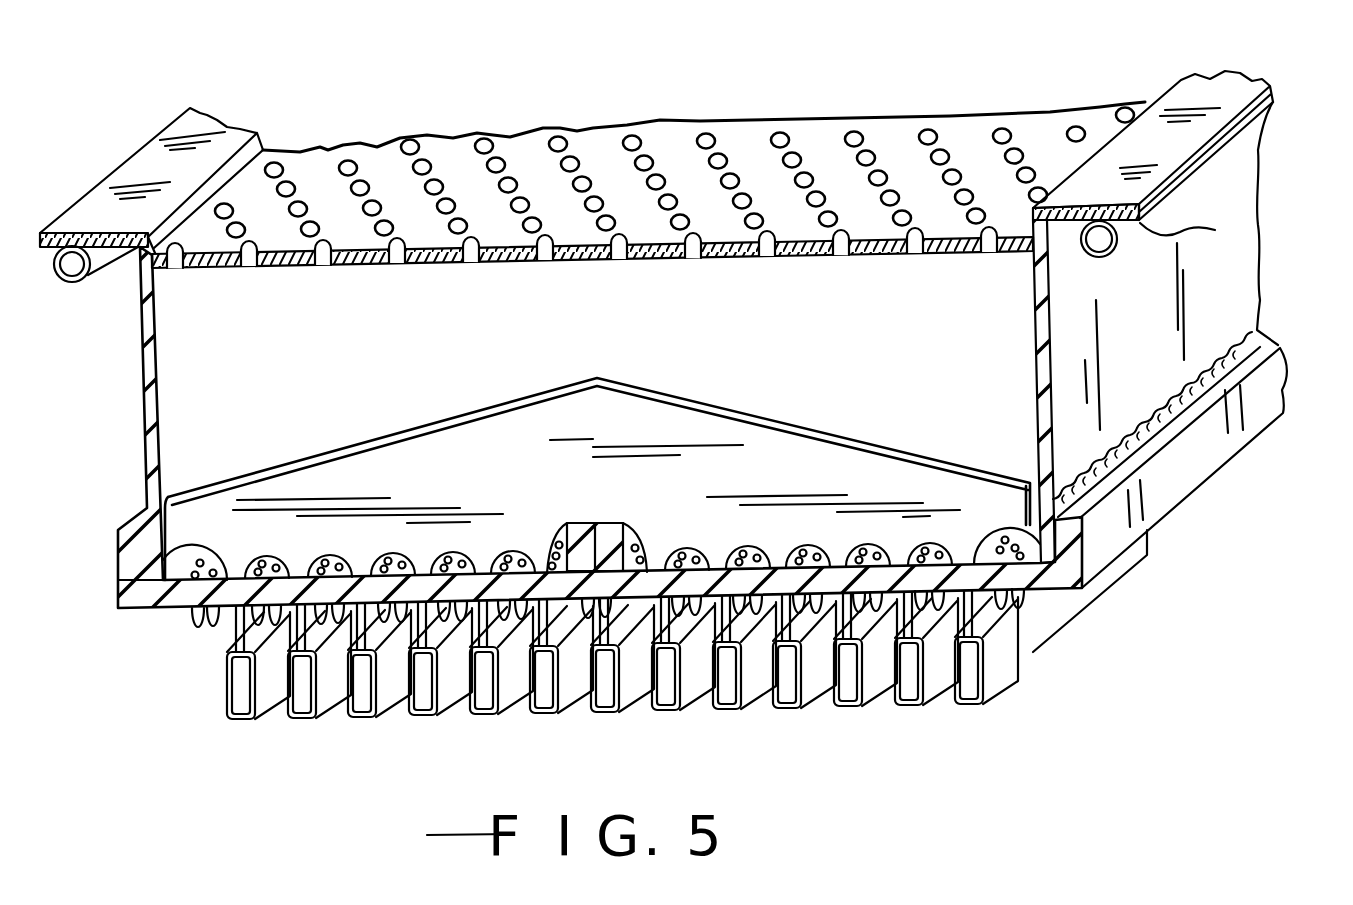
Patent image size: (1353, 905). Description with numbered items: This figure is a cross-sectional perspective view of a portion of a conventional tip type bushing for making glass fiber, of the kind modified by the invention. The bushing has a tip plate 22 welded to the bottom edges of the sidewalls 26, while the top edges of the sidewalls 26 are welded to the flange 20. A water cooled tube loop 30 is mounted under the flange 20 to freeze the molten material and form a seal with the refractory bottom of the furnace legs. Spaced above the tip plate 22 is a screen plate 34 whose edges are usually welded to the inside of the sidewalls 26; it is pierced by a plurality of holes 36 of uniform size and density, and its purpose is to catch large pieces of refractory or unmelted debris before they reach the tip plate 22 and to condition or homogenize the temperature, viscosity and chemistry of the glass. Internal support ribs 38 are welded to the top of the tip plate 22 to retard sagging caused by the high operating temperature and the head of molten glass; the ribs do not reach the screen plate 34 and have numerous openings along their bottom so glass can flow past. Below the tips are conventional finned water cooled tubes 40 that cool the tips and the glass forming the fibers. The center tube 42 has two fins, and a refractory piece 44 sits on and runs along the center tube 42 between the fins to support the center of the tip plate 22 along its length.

The flange 20 is at (1212, 100).
The tip plate 22 is at (1066, 592).
The sidewalls 26 is at (1193, 280).
The water cooled tube loop 30 is at (1113, 246).
The screen plate 34 is at (897, 152).
The holes 36 is at (1072, 130).
The internal support ribs 38 is at (877, 487).
The finned water cooled tubes 40 is at (967, 717).
The center tube 42 is at (600, 712).
The refractory piece 44 is at (585, 625).